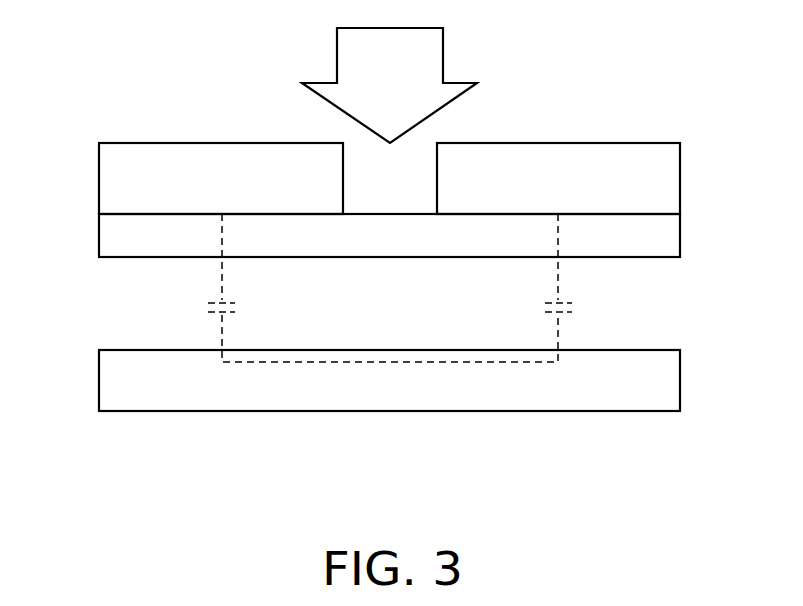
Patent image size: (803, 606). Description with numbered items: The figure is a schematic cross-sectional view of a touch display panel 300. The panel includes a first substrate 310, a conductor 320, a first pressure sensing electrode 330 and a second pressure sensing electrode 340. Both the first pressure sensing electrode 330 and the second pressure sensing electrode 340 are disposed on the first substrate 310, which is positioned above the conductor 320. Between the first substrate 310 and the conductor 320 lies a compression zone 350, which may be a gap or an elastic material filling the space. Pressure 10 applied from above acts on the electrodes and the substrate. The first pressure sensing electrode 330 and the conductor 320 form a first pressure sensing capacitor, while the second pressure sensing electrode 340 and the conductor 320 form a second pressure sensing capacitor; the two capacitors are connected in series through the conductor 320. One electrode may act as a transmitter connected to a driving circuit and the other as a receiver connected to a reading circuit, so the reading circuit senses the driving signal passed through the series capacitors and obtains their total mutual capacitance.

The pressure 10 is at (443, 55).
The touch display panel 300 is at (668, 461).
The first substrate 310 is at (680, 237).
The conductor 320 is at (680, 380).
The first pressure sensing electrode 330 is at (99, 193).
The second pressure sensing electrode 340 is at (680, 193).
The compression zone 350 is at (688, 258).